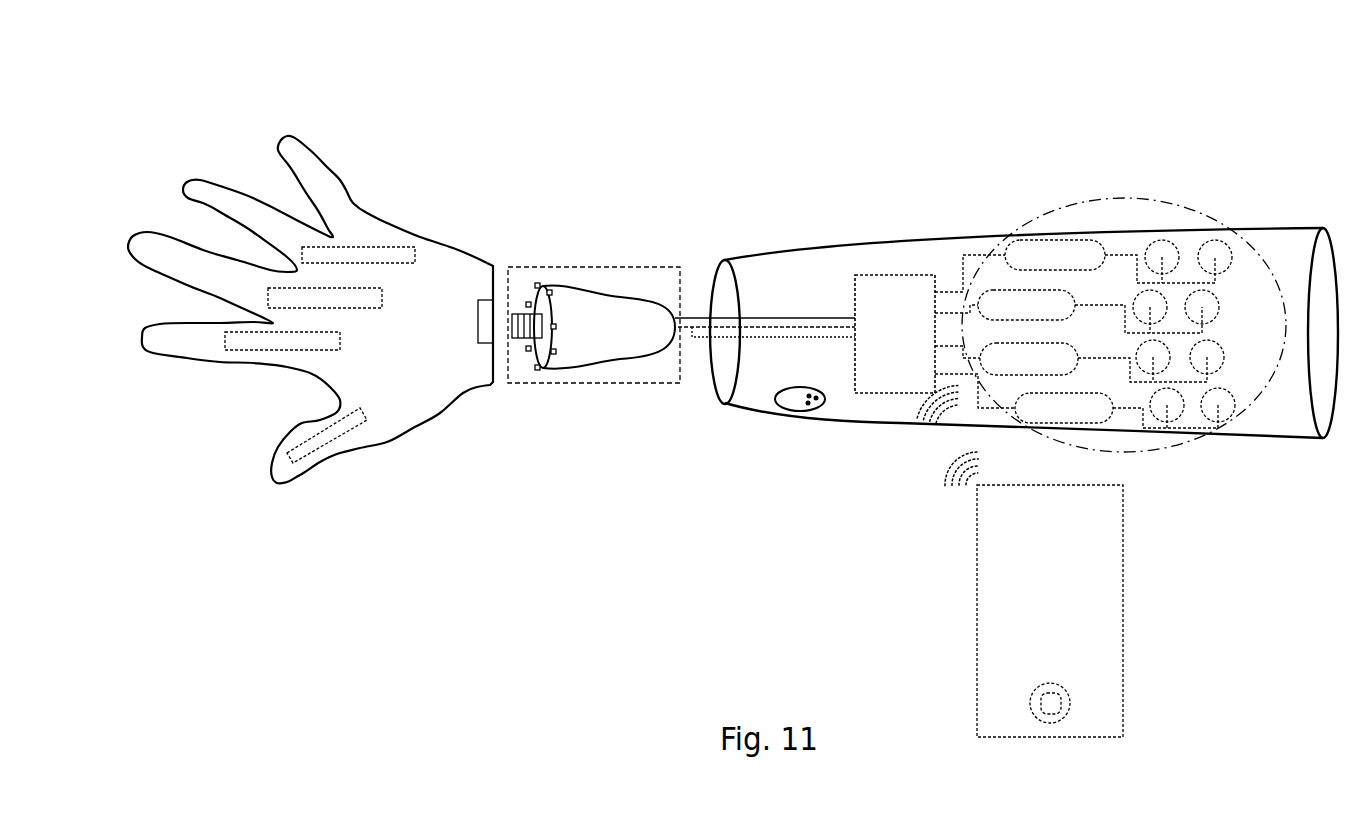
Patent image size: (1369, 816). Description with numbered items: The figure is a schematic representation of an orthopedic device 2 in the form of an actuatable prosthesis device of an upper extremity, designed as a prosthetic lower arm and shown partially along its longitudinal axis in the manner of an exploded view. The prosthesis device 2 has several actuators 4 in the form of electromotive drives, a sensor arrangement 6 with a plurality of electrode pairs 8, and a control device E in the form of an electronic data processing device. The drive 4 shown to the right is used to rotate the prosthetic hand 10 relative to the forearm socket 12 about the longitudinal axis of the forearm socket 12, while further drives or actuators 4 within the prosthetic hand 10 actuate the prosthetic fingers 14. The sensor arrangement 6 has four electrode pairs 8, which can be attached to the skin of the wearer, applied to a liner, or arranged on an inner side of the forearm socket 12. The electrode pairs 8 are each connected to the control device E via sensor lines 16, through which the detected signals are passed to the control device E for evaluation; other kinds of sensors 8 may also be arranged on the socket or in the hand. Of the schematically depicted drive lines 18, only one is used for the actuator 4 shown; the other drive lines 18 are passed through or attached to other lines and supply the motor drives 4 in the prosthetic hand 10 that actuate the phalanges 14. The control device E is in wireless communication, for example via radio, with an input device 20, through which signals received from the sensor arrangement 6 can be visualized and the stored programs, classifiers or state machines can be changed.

The orthopedic device 2 is at (524, 127).
The actuators 4 is at (357, 293).
The sensor arrangement 6 is at (1088, 200).
The electrode pairs 8 is at (1213, 255).
The prosthetic hand 10 is at (445, 367).
The forearm socket 12 is at (877, 412).
The prosthetic fingers 14 is at (198, 337).
The sensor lines 16 is at (945, 290).
The drive lines 18 is at (748, 320).
The input device 20 is at (1115, 552).
The control device E is at (887, 285).